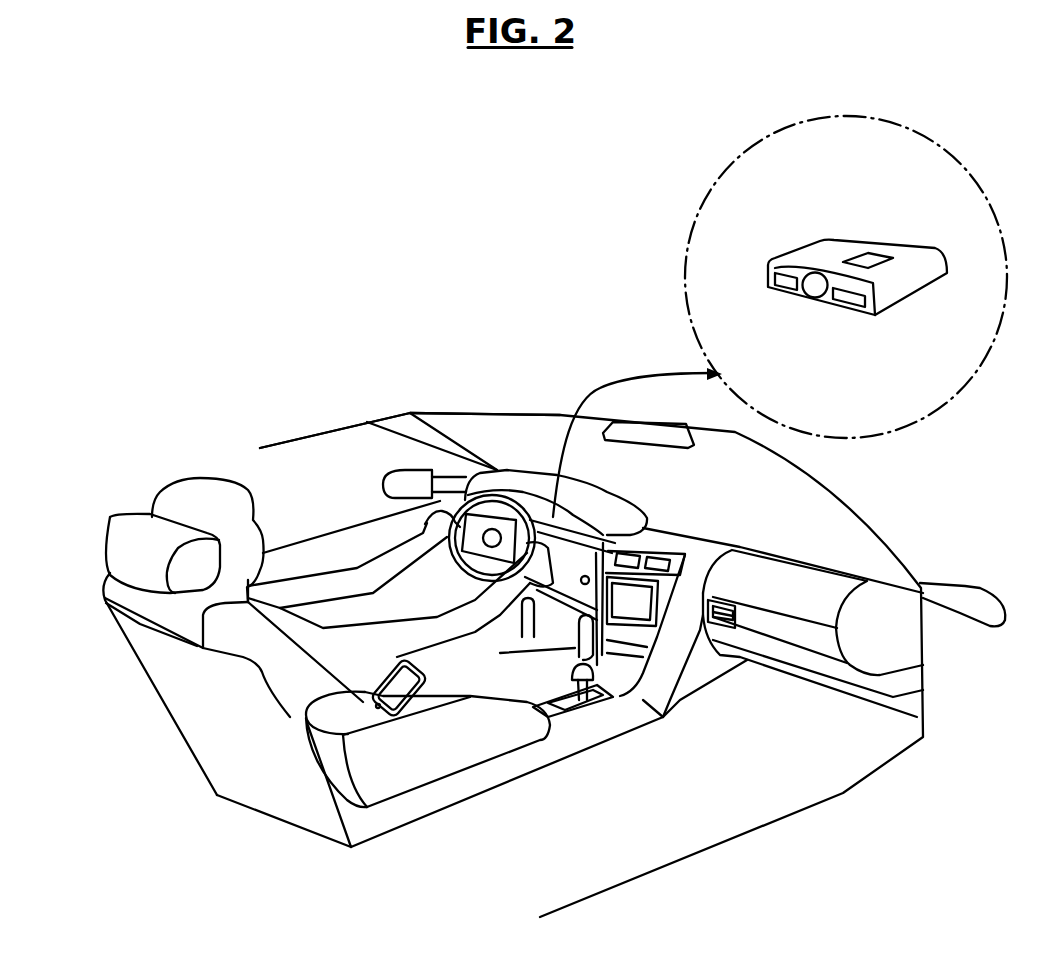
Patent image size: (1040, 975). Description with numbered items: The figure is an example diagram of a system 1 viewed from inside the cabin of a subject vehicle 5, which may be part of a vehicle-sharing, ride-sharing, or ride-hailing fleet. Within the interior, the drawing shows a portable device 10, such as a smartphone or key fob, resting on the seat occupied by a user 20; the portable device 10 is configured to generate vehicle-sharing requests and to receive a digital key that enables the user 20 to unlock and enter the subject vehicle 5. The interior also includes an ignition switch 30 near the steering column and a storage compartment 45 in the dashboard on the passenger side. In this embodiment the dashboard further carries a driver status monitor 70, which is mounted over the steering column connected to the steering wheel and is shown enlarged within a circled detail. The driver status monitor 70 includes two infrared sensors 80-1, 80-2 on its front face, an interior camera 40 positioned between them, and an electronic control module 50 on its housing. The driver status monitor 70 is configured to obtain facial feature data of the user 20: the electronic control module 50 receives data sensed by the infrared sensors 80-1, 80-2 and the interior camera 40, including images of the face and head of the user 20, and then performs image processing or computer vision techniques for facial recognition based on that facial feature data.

The system 1 is at (190, 275).
The subject vehicle 5 is at (410, 413).
The portable device 10 is at (383, 678).
The user 20 is at (180, 480).
The ignition switch 30 is at (582, 620).
The interior camera 40 is at (813, 300).
The storage compartment 45 is at (757, 645).
The electronic control module (ECM) 50 is at (877, 257).
The driver status monitor (DSM) 70 is at (687, 242).
The infrared sensor 80-1 is at (792, 287).
The infrared sensor 80-2 is at (843, 300).